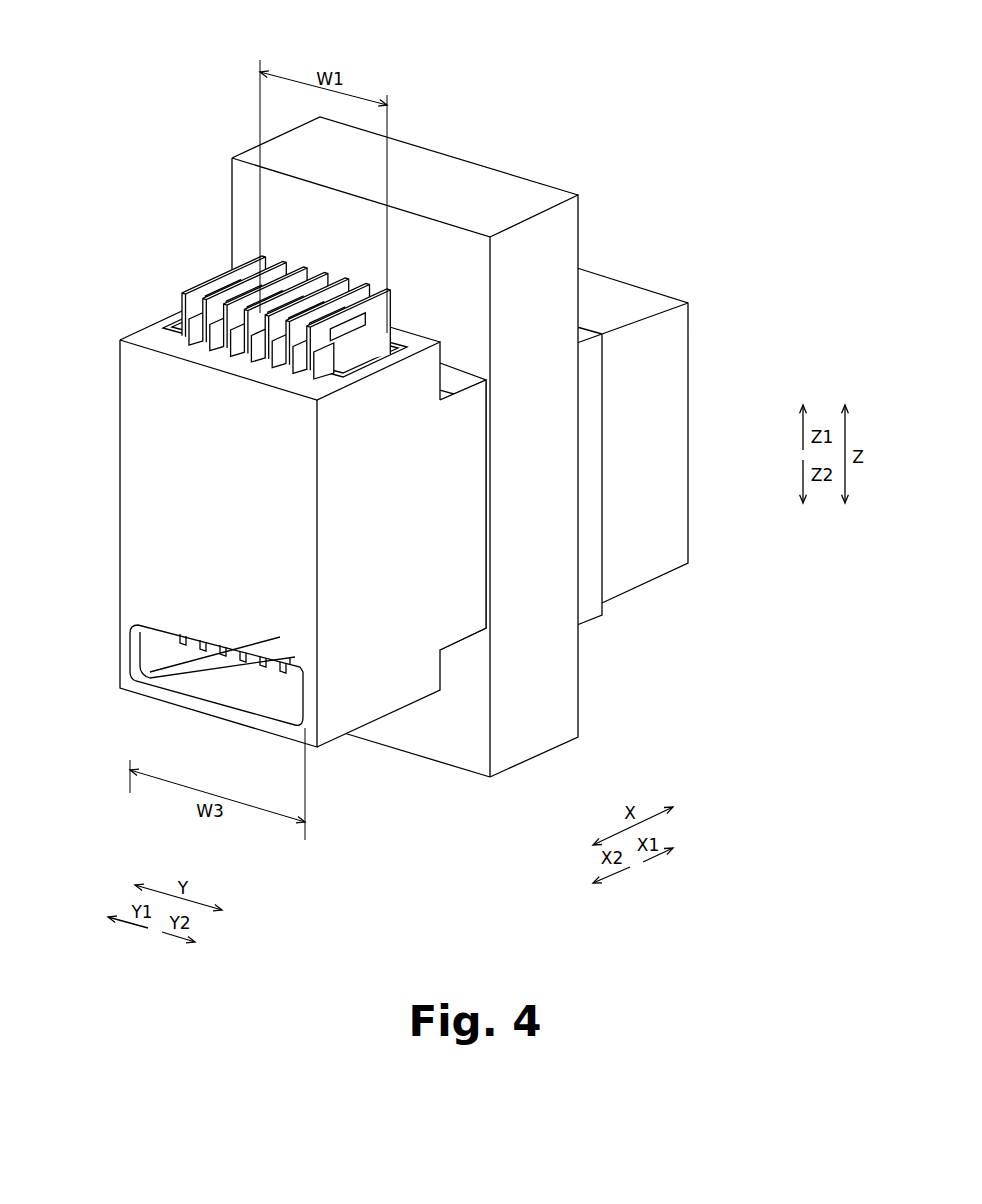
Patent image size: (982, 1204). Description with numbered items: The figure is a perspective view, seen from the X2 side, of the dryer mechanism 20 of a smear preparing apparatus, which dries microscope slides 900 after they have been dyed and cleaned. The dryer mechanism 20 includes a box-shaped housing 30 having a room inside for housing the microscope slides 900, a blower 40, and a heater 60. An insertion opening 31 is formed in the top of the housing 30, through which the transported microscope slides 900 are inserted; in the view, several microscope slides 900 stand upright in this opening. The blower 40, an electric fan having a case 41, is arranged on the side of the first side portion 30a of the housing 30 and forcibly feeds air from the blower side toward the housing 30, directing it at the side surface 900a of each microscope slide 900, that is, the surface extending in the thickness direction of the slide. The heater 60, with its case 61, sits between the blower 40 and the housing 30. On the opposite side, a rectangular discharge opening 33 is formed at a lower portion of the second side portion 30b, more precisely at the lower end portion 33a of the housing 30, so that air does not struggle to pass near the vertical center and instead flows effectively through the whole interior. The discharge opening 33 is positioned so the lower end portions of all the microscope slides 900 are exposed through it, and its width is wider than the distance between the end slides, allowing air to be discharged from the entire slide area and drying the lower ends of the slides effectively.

The dryer mechanism 20 is at (437, 65).
The housing 30 is at (117, 330).
The first side portion 30a is at (442, 357).
The second side portion 30b is at (143, 551).
The insertion opening 31 is at (383, 358).
The discharge opening 33 is at (216, 694).
The lower end portion 33a is at (214, 700).
The blower 40 is at (669, 254).
The case 41 is at (662, 431).
The heater 60 is at (452, 143).
The case 61 is at (565, 247).
The microscope slide 900 is at (222, 270).
The side surface 900a is at (181, 307).